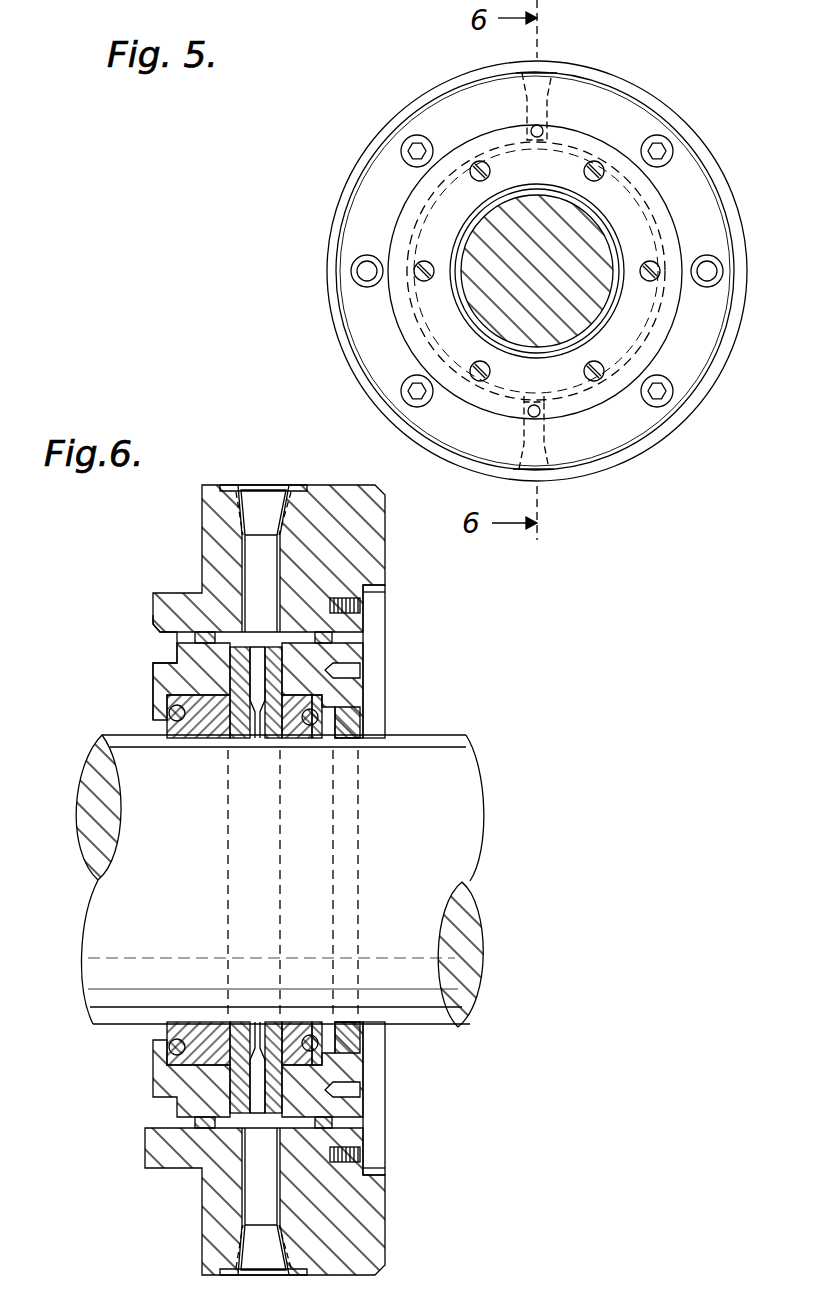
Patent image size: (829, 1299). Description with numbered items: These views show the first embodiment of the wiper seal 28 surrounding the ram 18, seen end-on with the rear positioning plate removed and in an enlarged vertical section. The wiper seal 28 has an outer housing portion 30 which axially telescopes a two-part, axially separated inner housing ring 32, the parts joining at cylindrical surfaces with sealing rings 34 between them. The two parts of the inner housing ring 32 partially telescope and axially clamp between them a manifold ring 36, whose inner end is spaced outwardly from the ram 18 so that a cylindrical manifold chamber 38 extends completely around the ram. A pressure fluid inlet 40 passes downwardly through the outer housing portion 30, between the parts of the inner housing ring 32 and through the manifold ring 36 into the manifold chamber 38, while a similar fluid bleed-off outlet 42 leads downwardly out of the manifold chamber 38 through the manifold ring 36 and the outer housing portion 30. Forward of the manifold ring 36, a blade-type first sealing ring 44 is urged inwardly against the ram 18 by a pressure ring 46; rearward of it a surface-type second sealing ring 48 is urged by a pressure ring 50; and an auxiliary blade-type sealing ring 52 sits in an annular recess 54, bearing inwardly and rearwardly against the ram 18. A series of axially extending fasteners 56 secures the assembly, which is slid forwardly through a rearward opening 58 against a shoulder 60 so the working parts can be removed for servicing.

In FIG. 5, the ram 18 is at (490, 262).
In FIG. 6, the ram 18 is at (98, 760).
In FIG. 5, the wiper seal 28 is at (366, 139).
In FIG. 6, the wiper seal 28 is at (148, 664).
In FIG. 5, the outer housing portion 30 is at (690, 172).
In FIG. 6, the outer housing portion 30 is at (218, 548).
In FIG. 5, the inner housing ring 32 is at (640, 232).
In FIG. 6, the inner housing ring 32 is at (153, 688).
In FIG. 6, the sealing rings 34 is at (205, 626).
In FIG. 6, the manifold ring 36 is at (240, 742).
In FIG. 5, the manifold chamber 38 is at (567, 403).
In FIG. 6, the manifold chamber 38 is at (278, 740).
In FIG. 5, the pressure fluid inlet 40 is at (545, 72).
In FIG. 6, the pressure fluid inlet 40 is at (268, 498).
In FIG. 5, the fluid bleed-off outlet 42 is at (553, 483).
In FIG. 6, the fluid bleed-off outlet 42 is at (245, 1250).
In FIG. 6, the first sealing ring 44 is at (205, 740).
In FIG. 6, the pressure ring 46 is at (175, 738).
In FIG. 6, the second sealing ring 48 is at (288, 740).
In FIG. 6, the pressure ring 50 is at (305, 740).
In FIG. 5, the auxiliary sealing ring 52 is at (457, 296).
In FIG. 6, the auxiliary sealing ring 52 is at (322, 740).
In FIG. 6, the annular recess 54 is at (347, 718).
In FIG. 5, the fasteners 56 is at (479, 158).
In FIG. 6, the rearward opening 58 is at (347, 652).
In FIG. 6, the shoulder 60 is at (185, 622).